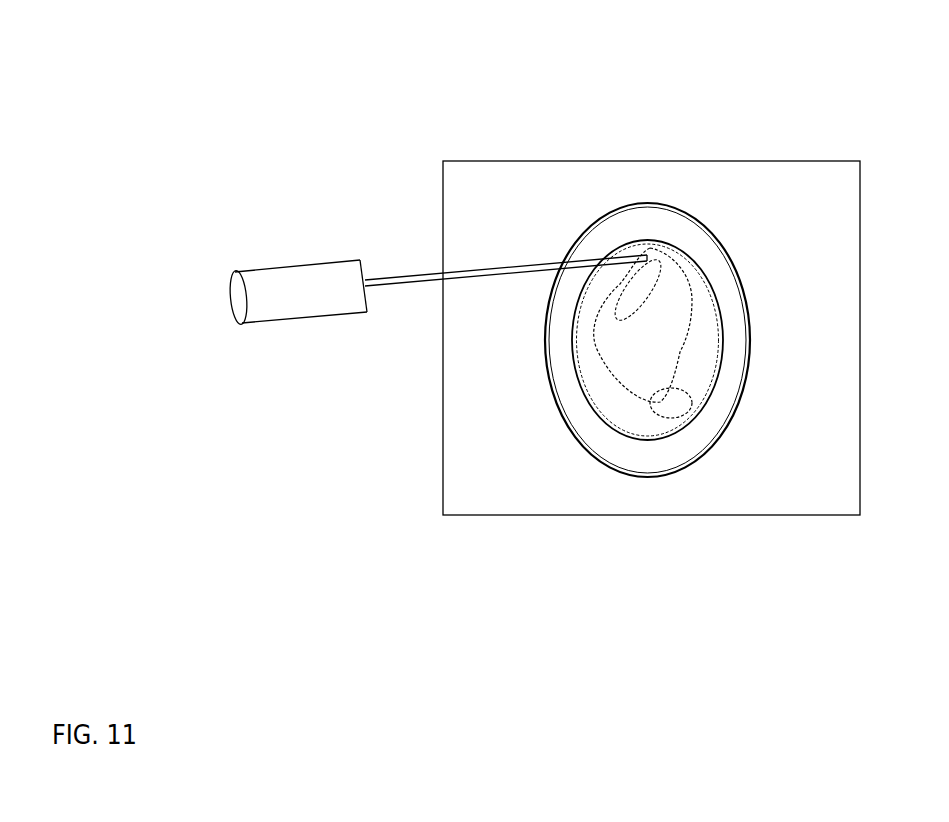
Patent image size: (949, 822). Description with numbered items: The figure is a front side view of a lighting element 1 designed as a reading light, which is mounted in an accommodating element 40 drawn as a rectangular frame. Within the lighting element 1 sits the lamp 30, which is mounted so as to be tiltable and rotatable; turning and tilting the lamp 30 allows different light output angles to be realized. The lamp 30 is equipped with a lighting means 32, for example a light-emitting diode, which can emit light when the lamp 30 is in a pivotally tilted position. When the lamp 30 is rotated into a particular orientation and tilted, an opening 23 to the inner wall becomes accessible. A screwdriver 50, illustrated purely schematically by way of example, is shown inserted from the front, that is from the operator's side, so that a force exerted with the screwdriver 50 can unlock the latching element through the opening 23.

The lighting element 1 is at (677, 207).
The opening 23 is at (647, 252).
The lamp 30 is at (647, 342).
The lighting means 32 is at (680, 407).
The accommodating element 40 is at (537, 202).
The screwdriver 50 is at (323, 263).